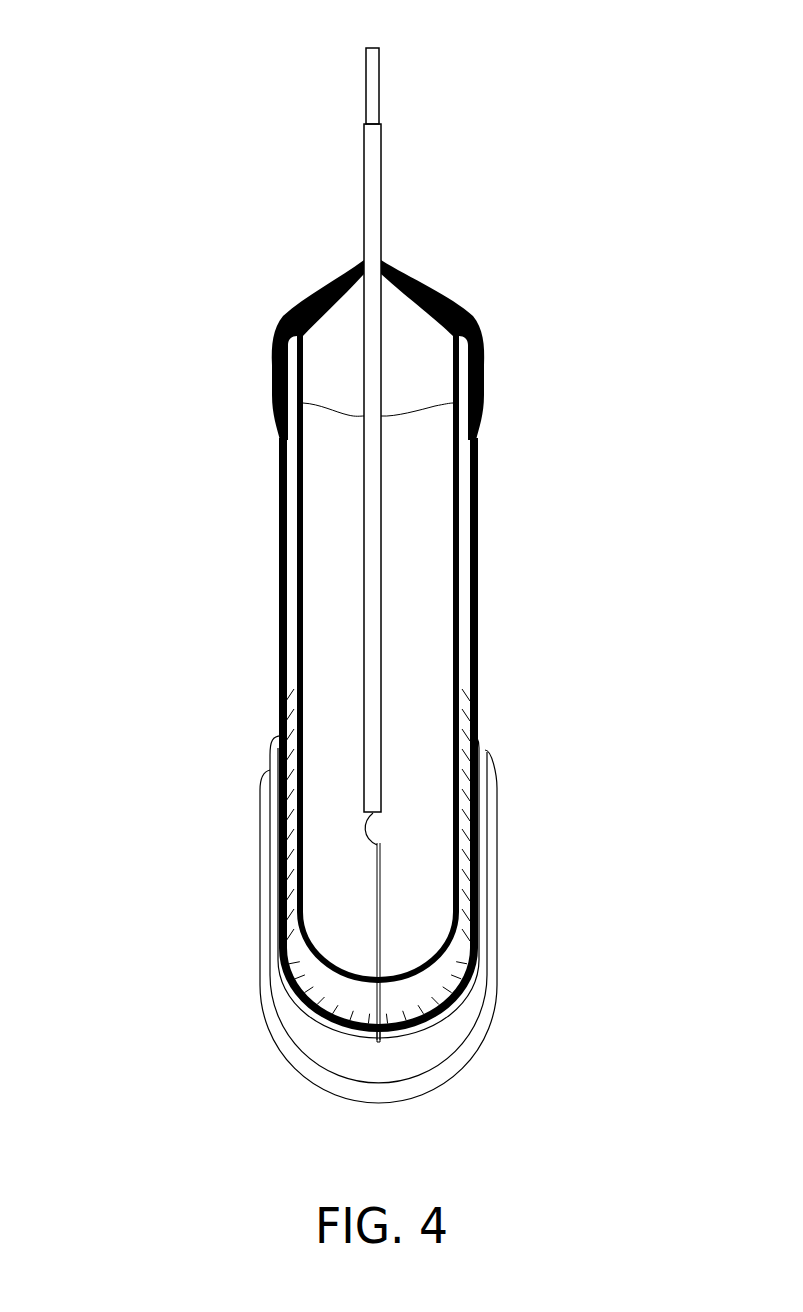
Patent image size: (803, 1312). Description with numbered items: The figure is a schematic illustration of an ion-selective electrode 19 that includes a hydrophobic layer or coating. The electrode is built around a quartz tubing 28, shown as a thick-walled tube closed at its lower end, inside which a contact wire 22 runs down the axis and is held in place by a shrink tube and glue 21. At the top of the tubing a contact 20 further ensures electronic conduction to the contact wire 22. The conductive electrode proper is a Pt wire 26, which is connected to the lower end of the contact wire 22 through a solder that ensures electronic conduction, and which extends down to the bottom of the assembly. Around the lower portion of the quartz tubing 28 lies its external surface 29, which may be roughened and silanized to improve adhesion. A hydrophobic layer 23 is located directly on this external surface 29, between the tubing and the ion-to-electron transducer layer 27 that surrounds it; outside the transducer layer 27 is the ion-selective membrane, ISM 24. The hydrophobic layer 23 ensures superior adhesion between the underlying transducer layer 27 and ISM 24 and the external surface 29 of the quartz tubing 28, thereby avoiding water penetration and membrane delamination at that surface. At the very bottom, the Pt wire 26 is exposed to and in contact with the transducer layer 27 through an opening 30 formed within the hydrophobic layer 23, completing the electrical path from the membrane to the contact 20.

The ion-selective electrode 19 is at (593, 260).
The contact 20 is at (380, 102).
The shrink tube and glue 21 is at (411, 343).
The contact wire 22 is at (383, 659).
The hydrophobic layer 23 is at (480, 743).
The ISM 24 is at (492, 926).
The Pt wire 26 is at (384, 918).
The ion-to-electron transducer layer 27 is at (433, 1039).
The quartz tubing 28 is at (292, 542).
The external surface 29 is at (280, 780).
The opening 30 is at (376, 1043).